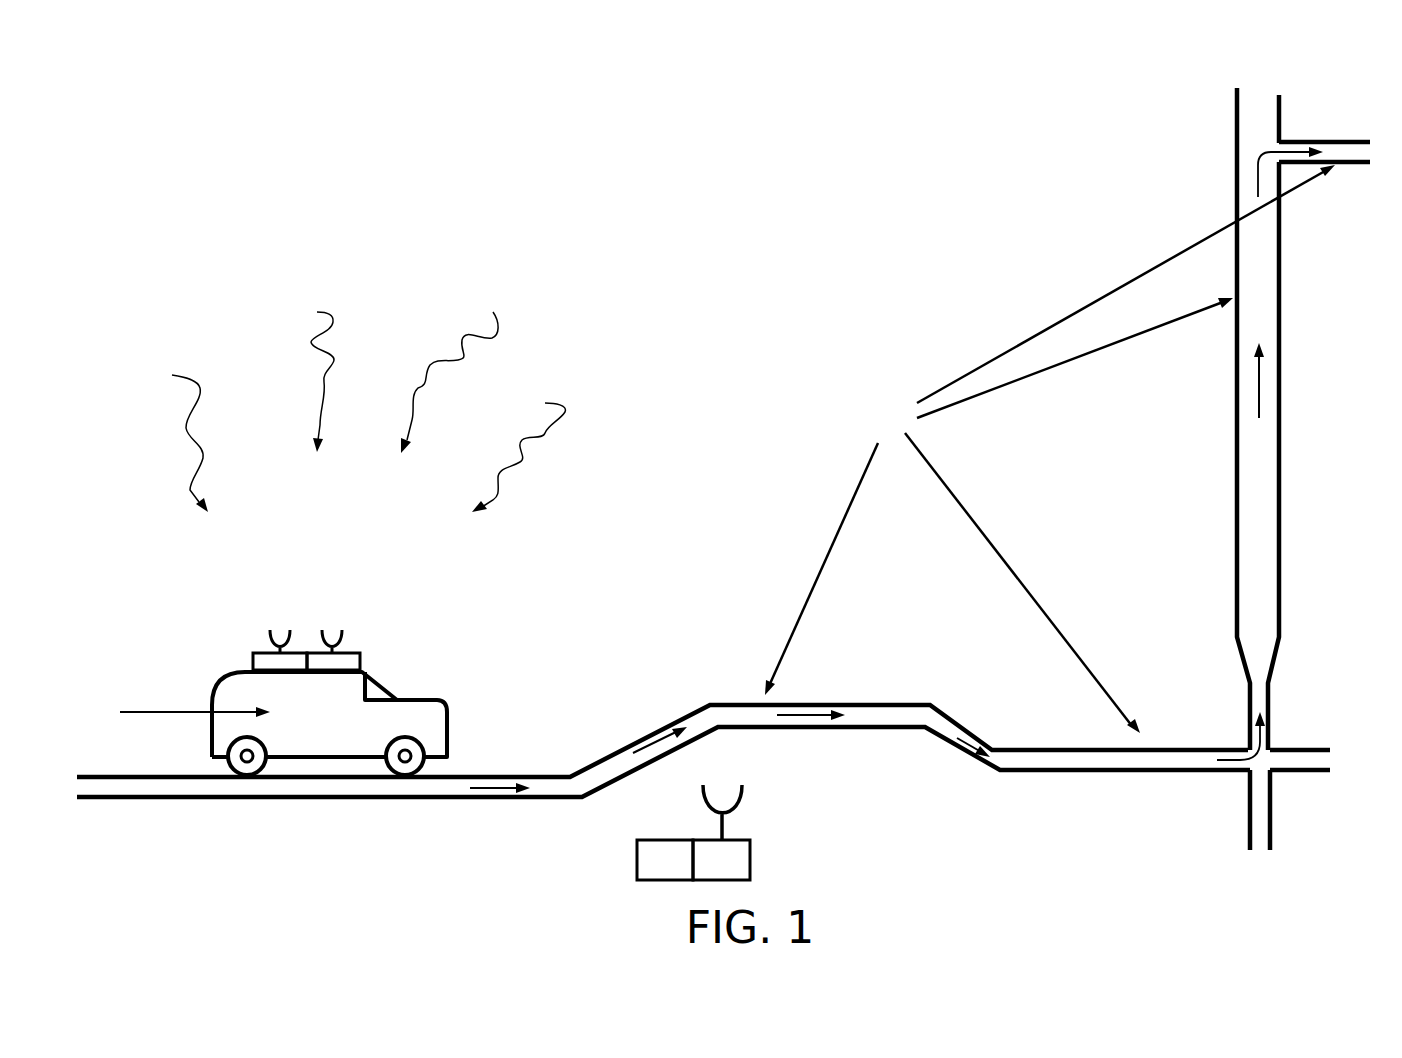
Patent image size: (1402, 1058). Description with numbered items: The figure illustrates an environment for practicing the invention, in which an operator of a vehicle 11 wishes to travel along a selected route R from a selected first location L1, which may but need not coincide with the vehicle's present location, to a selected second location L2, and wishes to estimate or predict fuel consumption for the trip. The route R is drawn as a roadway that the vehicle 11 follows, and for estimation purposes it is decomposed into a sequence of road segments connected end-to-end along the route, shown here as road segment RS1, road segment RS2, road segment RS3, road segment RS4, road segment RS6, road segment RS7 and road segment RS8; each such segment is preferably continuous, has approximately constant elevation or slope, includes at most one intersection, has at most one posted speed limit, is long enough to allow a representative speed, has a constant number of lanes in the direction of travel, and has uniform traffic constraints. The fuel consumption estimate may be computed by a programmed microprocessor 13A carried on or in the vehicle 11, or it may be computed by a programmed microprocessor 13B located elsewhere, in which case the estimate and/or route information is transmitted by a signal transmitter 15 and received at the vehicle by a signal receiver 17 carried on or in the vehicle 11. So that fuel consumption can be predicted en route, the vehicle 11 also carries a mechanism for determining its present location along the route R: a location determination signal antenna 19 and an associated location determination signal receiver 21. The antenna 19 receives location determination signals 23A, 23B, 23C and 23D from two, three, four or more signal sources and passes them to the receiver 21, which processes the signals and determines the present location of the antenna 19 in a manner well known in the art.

The vehicle 11 is at (400, 722).
The programmed microprocessor 13A is at (378, 631).
The signal receiver 17 is at (357, 660).
The programmed microprocessor 13B is at (657, 865).
The signal transmitter 15 is at (740, 865).
The location determination signal antenna 19 is at (273, 632).
The location determination signal receiver 21 is at (262, 660).
The location determination signal 23A is at (197, 382).
The location determination signal 23B is at (335, 315).
The location determination signal 23C is at (498, 327).
The location determination signal 23D is at (563, 410).
The route R is at (1050, 449).
The road segment RS1 is at (170, 803).
The road segment RS2 is at (630, 720).
The road segment RS3 is at (720, 730).
The road segment RS4 is at (975, 715).
The road segment RS6 is at (990, 777).
The road segment RS7 is at (1287, 750).
The road segment RS8 is at (1365, 140).
The first location L1 is at (296, 766).
The second location L2 is at (1355, 72).